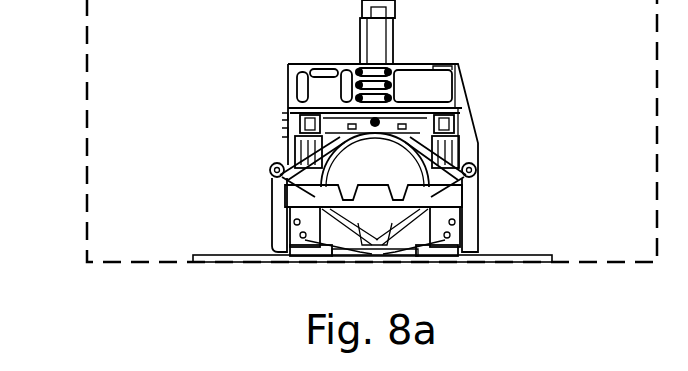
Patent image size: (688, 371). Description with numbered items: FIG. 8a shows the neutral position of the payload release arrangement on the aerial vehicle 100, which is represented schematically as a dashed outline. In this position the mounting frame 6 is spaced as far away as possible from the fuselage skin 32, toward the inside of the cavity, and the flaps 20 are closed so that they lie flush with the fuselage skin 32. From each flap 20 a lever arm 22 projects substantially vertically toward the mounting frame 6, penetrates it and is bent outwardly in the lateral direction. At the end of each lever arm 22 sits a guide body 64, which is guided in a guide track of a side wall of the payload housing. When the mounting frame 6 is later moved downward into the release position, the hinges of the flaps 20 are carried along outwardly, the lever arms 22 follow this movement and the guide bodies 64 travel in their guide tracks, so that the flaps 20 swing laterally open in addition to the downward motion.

The aerial vehicle 100 is at (87, 228).
The mounting frame 6 is at (475, 150).
The guide body 64 is at (478, 160).
The lever arm 22 is at (478, 175).
The flap 20 is at (307, 252).
The fuselage skin 32 is at (528, 259).